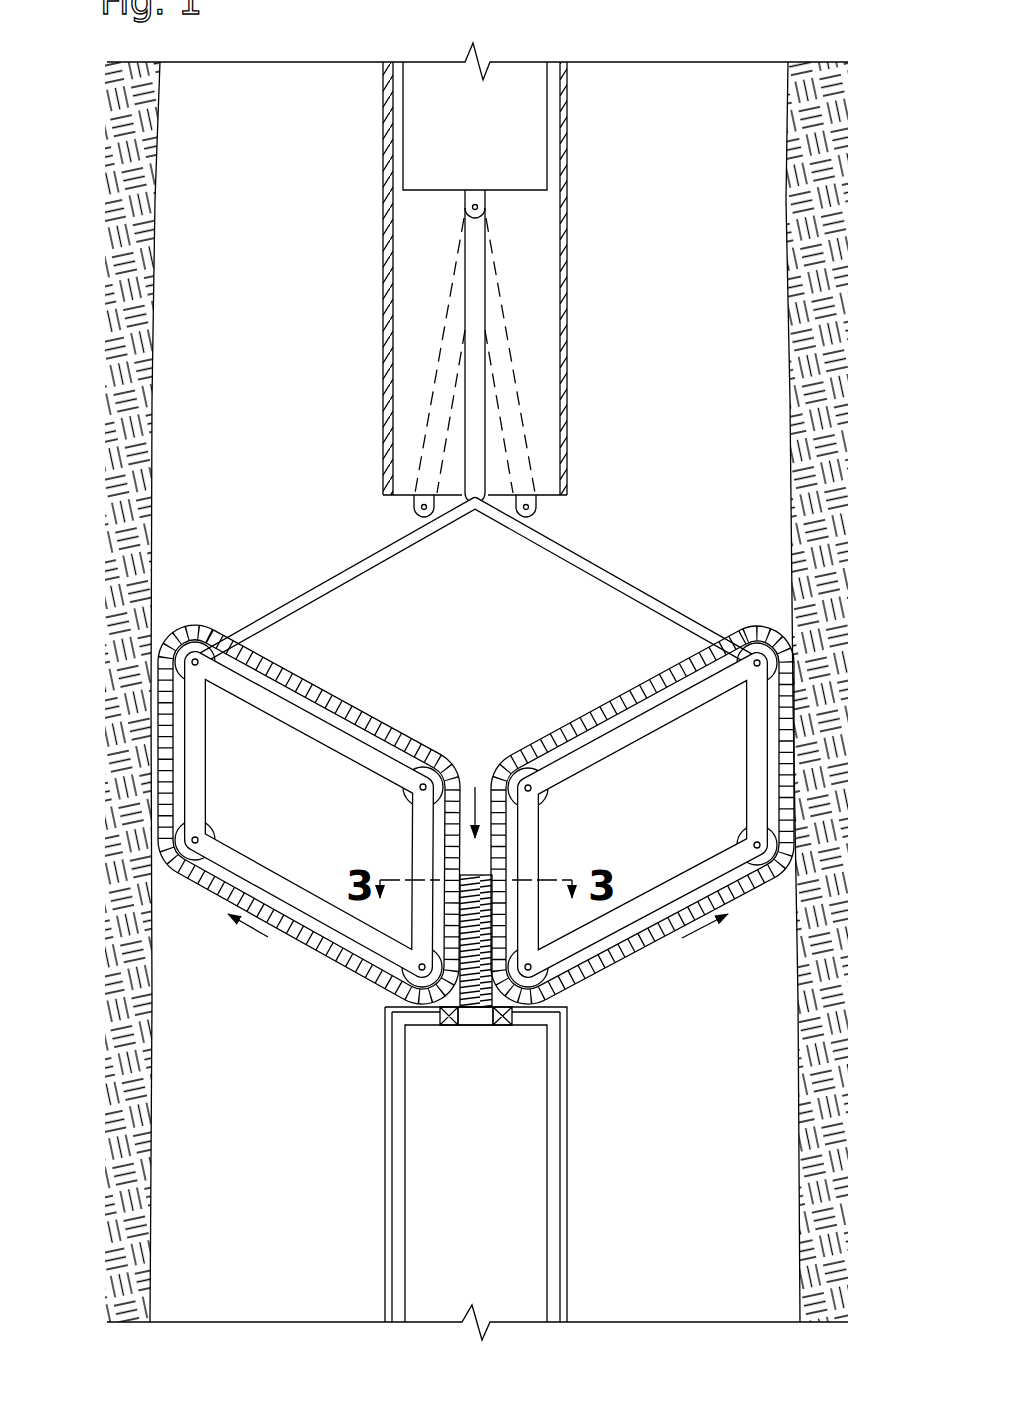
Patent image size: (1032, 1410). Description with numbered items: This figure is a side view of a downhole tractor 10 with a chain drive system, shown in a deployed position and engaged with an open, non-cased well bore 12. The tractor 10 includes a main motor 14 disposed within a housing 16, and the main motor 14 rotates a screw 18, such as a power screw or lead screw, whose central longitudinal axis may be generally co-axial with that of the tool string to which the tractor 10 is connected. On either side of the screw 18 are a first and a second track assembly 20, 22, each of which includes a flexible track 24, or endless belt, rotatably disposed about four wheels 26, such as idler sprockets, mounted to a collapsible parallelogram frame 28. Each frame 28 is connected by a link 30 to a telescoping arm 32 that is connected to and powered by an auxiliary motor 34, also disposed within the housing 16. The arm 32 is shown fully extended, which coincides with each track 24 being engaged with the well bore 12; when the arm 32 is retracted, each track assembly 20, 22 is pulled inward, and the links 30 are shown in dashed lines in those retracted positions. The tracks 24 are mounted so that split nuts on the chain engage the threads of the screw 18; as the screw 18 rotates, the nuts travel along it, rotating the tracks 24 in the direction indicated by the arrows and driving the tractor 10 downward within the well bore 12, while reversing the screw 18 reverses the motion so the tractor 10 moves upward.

The downhole tractor 10 is at (260, 465).
The well bore 12 is at (768, 402).
The main motor 14 is at (535, 1112).
The housing 16 is at (567, 270).
The screw 18 is at (480, 878).
The first track assembly 20 is at (281, 947).
The second track assembly 22 is at (666, 957).
The flexible track 24 is at (338, 690).
The wheels 26 is at (182, 628).
The collapsible parallelogram frame 28 is at (218, 768).
The link 30 is at (322, 583).
The telescoping arm 32 is at (478, 372).
The auxiliary motor 34 is at (522, 157).